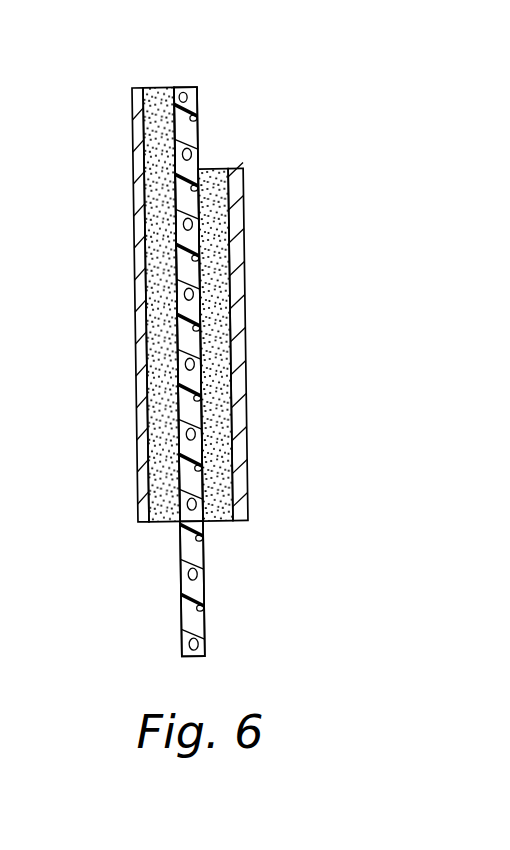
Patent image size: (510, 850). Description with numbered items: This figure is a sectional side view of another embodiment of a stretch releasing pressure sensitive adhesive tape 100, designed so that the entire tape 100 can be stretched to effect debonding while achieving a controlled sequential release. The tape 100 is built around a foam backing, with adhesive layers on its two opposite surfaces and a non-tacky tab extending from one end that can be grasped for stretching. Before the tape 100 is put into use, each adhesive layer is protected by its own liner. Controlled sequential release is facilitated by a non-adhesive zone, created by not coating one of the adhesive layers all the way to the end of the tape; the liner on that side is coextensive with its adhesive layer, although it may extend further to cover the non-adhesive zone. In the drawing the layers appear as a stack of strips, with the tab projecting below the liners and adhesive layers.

The adhesive tape 100 is at (96, 448).